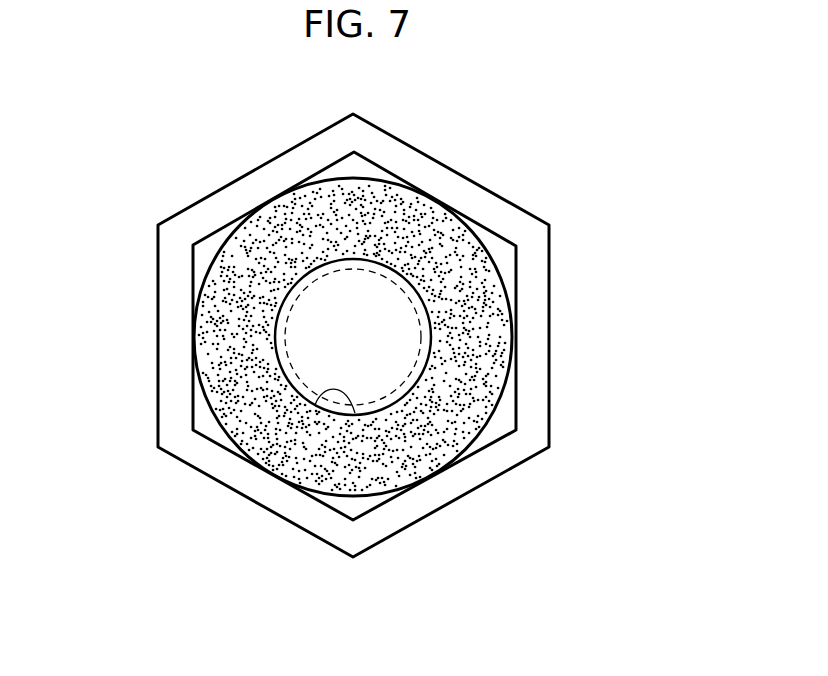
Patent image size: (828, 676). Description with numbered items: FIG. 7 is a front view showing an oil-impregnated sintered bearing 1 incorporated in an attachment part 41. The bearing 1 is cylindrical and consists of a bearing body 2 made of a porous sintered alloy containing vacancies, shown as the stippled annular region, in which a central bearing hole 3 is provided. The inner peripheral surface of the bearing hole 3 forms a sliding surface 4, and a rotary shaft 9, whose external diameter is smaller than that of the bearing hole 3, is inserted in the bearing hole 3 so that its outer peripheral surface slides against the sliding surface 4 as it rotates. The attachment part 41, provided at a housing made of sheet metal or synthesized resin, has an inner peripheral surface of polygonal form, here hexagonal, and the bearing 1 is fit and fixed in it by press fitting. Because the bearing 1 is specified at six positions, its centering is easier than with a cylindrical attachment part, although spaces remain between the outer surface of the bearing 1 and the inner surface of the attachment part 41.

The oil-impregnated sintered bearing 1 is at (478, 278).
The bearing body 2 is at (282, 243).
The bearing hole 3 is at (277, 316).
The sliding surface 4 is at (315, 405).
The rotary shaft 9 is at (370, 262).
The attachment part 41 is at (550, 328).